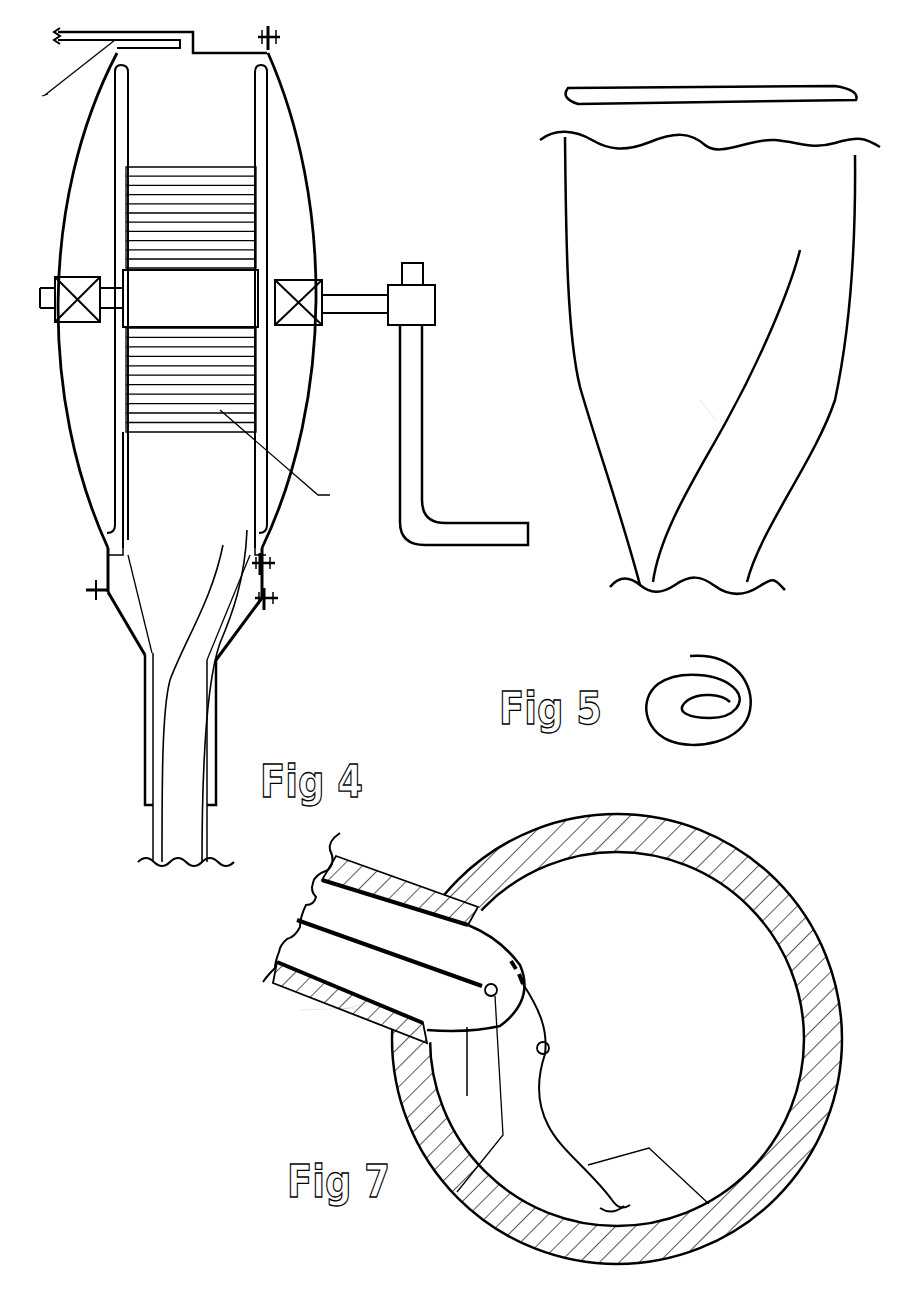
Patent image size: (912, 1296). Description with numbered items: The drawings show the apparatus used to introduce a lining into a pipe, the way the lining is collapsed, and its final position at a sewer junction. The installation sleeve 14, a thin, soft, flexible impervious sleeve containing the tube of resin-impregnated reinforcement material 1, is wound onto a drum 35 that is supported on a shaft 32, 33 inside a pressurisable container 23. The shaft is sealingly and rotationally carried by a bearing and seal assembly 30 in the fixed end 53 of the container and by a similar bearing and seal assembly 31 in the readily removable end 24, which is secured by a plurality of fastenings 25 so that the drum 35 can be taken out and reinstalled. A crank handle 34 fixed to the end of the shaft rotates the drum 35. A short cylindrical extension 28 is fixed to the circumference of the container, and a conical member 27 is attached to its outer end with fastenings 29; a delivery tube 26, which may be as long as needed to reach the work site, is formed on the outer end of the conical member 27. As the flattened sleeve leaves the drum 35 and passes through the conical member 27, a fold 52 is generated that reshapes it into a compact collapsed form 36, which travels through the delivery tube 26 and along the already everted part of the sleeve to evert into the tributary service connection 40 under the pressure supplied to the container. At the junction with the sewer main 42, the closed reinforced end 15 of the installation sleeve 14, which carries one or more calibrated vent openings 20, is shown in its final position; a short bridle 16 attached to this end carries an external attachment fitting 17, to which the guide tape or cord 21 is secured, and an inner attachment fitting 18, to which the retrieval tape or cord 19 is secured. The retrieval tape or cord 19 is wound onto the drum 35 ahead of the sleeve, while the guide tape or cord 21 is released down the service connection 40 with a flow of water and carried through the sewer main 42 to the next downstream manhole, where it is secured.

In FIG. 7, the reinforcement material 1 is at (312, 893).
In FIG. 5, the installation sleeve 14 is at (560, 91).
In FIG. 7, the installation sleeve 14 is at (355, 972).
In FIG. 7, the closed reinforced end 15 is at (467, 1096).
In FIG. 7, the short bridle 16 is at (545, 1029).
In FIG. 7, the external attachment fitting 17 is at (549, 1046).
In FIG. 7, the inner attachment fitting 18 is at (457, 1192).
In FIG. 7, the retrieval tape or cord 19 is at (514, 964).
In FIG. 7, the calibrated vent openings 20 is at (497, 985).
In FIG. 7, the guide tape or cord 21 is at (709, 1204).
In FIG. 4, the pressurisable container 23 is at (208, 493).
In FIG. 4, the removable end 24 is at (312, 205).
In FIG. 4, the fastenings 25 is at (280, 38).
In FIG. 4, the delivery tube 26 is at (145, 728).
In FIG. 4, the conical member 27 is at (125, 625).
In FIG. 4, the short cylindrical extension 28 is at (108, 572).
In FIG. 4, the fastenings 29 is at (268, 600).
In FIG. 4, the bearing and seal assembly 30 is at (80, 320).
In FIG. 4, the bearing and seal assembly 31 is at (290, 318).
In FIG. 4, the shaft 32 is at (115, 298).
In FIG. 4, the shaft 33 is at (337, 300).
In FIG. 4, the crank handle 34 is at (412, 462).
In FIG. 4, the drum 35 is at (258, 137).
In FIG. 4, the collapsed form 36 is at (178, 768).
In FIG. 5, the collapsed form 36 is at (647, 690).
In FIG. 7, the tributary service connection 40 is at (357, 990).
In FIG. 7, the sewer main 42 is at (709, 848).
In FIG. 4, the fold 52 is at (200, 625).
In FIG. 5, the fold 52 is at (713, 418).
In FIG. 4, the fixed end 53 is at (87, 503).